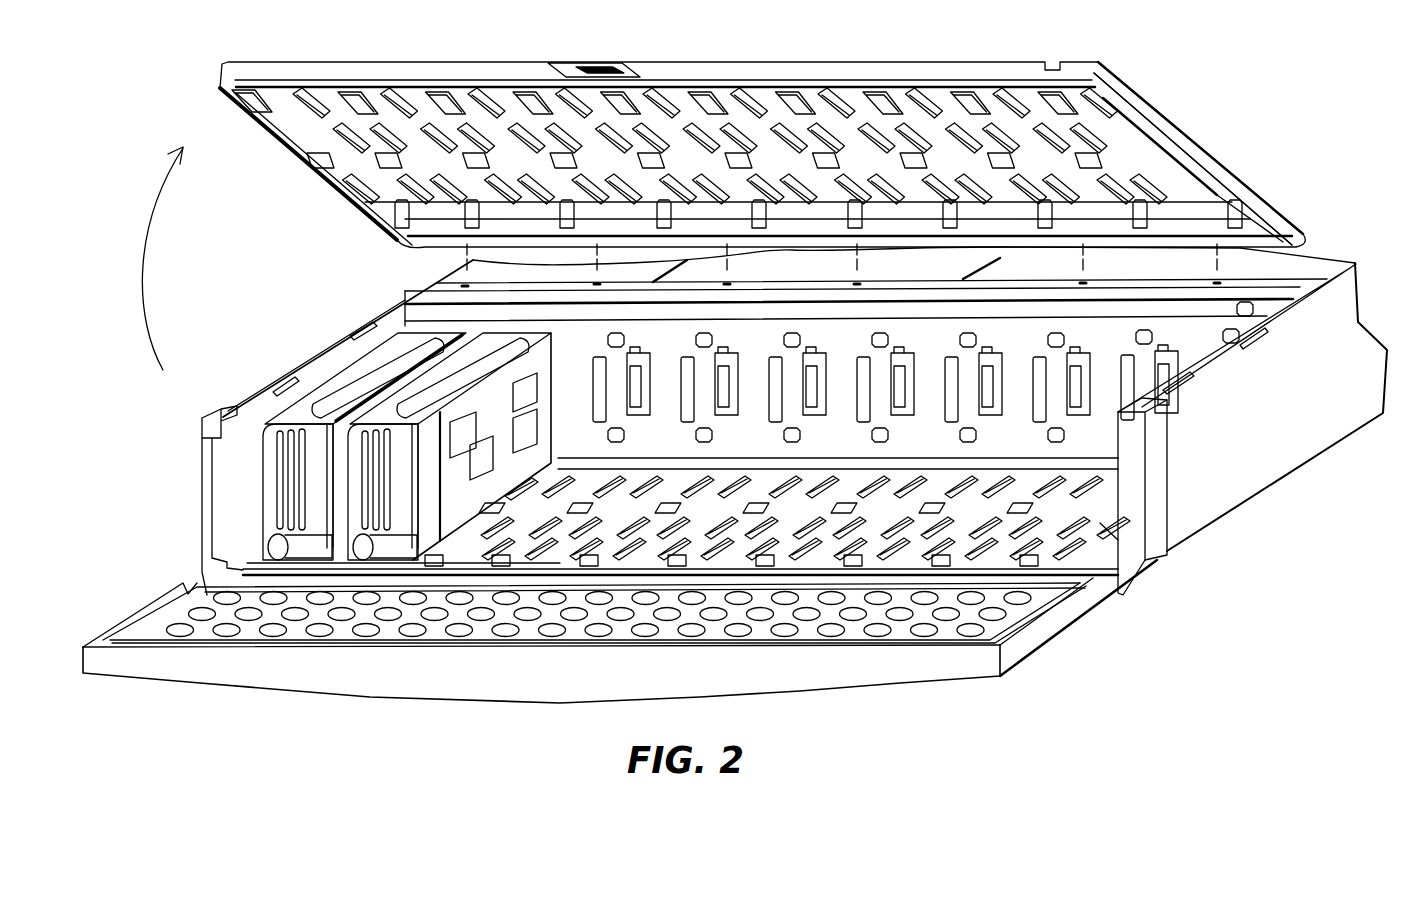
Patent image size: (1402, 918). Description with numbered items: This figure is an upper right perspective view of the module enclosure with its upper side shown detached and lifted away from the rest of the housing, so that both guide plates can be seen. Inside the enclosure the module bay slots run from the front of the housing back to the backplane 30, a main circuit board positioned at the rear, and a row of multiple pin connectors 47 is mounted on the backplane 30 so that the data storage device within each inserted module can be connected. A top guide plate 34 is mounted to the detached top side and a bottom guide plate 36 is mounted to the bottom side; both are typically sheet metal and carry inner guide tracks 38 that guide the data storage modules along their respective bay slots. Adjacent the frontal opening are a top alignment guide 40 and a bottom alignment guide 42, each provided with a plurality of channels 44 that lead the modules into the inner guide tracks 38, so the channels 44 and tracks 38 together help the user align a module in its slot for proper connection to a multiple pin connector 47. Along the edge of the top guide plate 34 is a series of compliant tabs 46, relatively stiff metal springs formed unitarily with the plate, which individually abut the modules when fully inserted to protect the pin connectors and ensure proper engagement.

The backplane 30 is at (594, 370).
The top guide plate 34 is at (1158, 164).
The bottom guide plate 36 is at (1098, 522).
The inner guide tracks 38 is at (958, 118).
The top alignment guide 40 is at (697, 107).
The bottom alignment guide 42 is at (1007, 540).
The channels 44 is at (552, 572).
The compliant tabs 46 is at (553, 235).
The multiple pin connector 47 is at (628, 388).